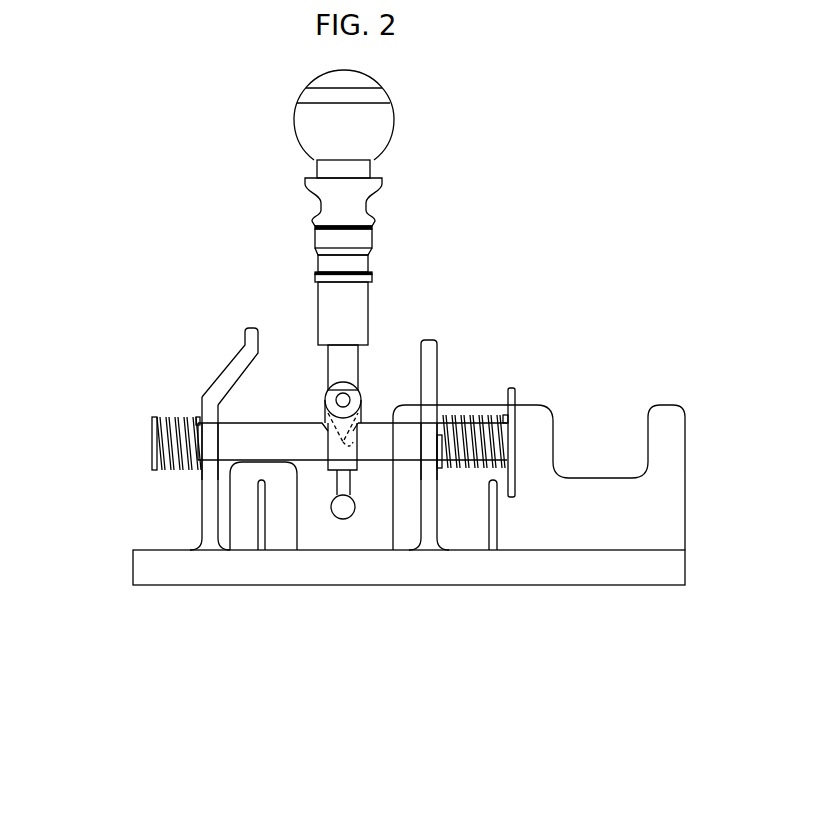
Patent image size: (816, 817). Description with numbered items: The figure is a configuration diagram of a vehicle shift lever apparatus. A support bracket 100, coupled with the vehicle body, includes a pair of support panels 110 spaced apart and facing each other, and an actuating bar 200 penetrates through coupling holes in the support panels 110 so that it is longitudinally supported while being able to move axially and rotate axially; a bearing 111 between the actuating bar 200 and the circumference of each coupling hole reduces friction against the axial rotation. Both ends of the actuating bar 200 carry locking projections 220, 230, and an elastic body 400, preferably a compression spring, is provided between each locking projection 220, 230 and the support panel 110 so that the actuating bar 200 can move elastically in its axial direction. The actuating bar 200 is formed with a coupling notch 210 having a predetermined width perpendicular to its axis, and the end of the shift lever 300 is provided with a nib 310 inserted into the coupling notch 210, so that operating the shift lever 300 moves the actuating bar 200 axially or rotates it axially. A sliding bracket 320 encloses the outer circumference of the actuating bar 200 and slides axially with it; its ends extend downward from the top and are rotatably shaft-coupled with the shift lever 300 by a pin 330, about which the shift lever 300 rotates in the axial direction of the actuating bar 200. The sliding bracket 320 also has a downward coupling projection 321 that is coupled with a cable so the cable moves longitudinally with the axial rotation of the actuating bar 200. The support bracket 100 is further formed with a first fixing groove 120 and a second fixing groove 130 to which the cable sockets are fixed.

The support bracket 100 is at (597, 573).
The support panel 110 is at (251, 328).
The bearing 111 is at (215, 477).
The first fixing groove 120 is at (298, 515).
The second fixing groove 130 is at (600, 478).
The actuating bar 200 is at (268, 432).
The coupling notch 210 is at (353, 442).
The locking projection 220 is at (512, 398).
The locking projection 230 is at (152, 443).
The shift lever 300 is at (360, 310).
The nib 310 is at (332, 390).
The sliding bracket 320 is at (357, 470).
The coupling projection 321 is at (345, 519).
The pin 330 is at (346, 386).
The elastic body 400 is at (165, 417).